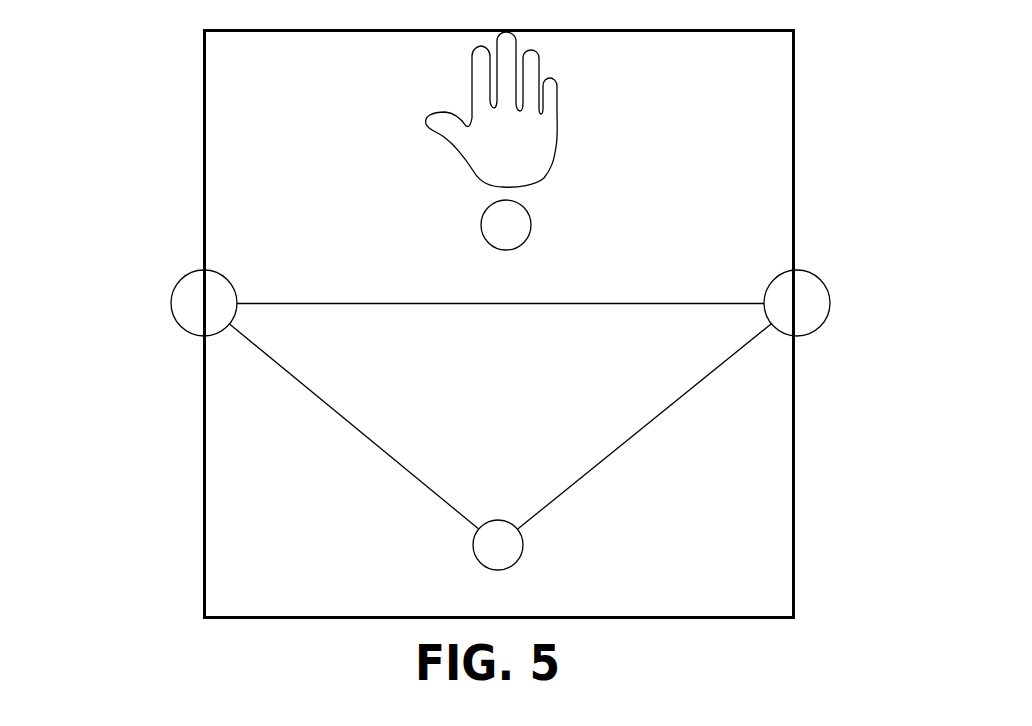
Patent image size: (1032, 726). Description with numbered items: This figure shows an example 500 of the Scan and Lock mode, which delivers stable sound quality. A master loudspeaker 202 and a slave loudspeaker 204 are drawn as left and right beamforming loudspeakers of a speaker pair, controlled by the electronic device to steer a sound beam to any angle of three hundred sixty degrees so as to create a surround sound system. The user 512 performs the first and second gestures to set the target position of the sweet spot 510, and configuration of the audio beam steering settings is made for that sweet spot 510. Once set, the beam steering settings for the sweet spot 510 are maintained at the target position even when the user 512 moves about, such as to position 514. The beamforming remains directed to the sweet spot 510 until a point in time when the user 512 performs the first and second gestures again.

The example of Scan and Lock mode 500 is at (847, 88).
The master loudspeaker 202 is at (192, 270).
The slave loudspeaker 204 is at (815, 272).
The sweet spot target position 510 is at (523, 545).
The user 512 is at (557, 147).
The position 514 is at (532, 226).